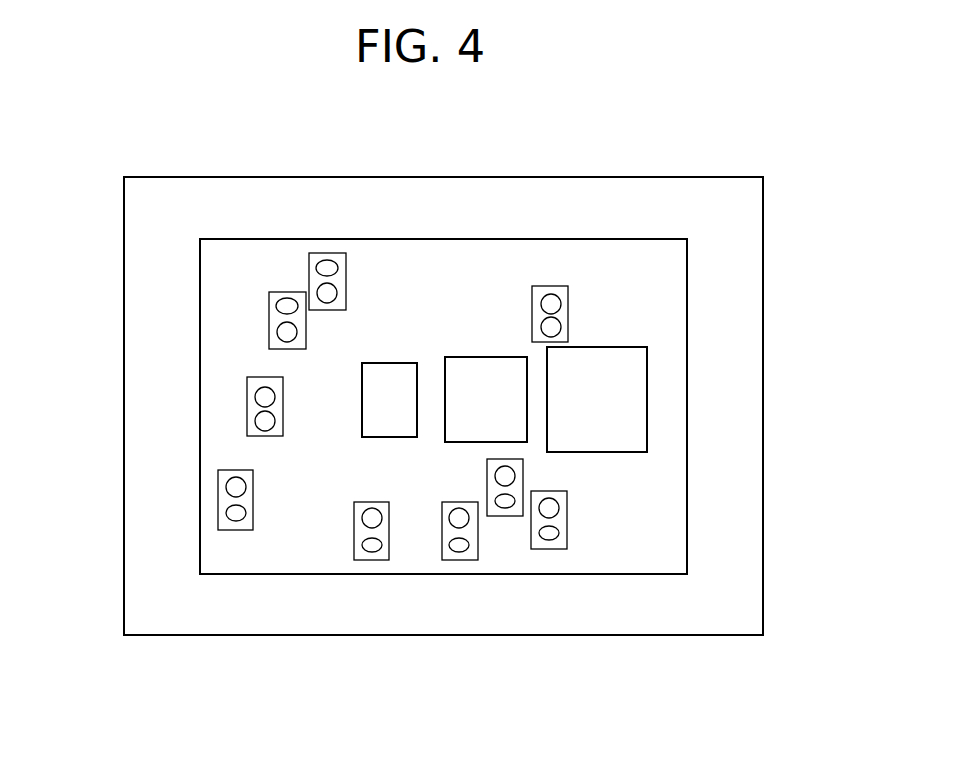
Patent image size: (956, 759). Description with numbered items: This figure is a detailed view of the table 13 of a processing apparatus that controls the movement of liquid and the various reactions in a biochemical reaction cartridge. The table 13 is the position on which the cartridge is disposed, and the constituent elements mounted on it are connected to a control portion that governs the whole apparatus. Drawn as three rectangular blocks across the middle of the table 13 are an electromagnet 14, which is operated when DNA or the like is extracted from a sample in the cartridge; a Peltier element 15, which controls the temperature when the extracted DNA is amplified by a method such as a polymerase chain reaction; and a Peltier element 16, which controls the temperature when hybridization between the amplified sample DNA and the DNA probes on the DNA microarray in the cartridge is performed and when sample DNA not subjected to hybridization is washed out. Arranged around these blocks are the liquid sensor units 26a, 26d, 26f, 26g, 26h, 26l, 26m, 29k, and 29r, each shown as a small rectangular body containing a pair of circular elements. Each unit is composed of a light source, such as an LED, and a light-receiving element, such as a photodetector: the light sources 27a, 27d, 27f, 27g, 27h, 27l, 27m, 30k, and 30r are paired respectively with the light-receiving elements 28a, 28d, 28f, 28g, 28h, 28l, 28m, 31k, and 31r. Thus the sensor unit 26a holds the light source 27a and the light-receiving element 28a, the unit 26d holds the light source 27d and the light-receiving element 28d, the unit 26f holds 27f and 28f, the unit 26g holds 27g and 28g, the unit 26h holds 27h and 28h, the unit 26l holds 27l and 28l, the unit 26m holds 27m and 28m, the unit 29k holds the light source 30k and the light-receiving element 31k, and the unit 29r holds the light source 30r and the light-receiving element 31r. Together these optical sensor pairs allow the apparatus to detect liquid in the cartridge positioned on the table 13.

The table 13 is at (297, 513).
The electromagnet 14 is at (397, 373).
The Peltier element 15 is at (484, 372).
The Peltier element 16 is at (640, 370).
The liquid sensor unit 26a is at (222, 502).
The light source 27a is at (230, 513).
The light-receiving element 28a is at (233, 486).
The liquid sensor unit 26d is at (353, 542).
The light source 27d is at (373, 545).
The light-receiving element 28d is at (363, 520).
The liquid sensor unit 26f is at (445, 533).
The light source 27f is at (462, 547).
The light-receiving element 28f is at (483, 530).
The liquid sensor unit 26g is at (517, 487).
The light source 27g is at (507, 505).
The light-receiving element 28g is at (512, 473).
The liquid sensor unit 26h is at (565, 523).
The light source 27h is at (553, 537).
The light-receiving element 28h is at (558, 508).
The liquid sensor unit 26l is at (276, 316).
The light source 27l is at (283, 306).
The light-receiving element 28l is at (283, 332).
The liquid sensor unit 26m is at (313, 280).
The light source 27m is at (330, 263).
The light-receiving element 28m is at (320, 292).
The liquid sensor unit 29k is at (255, 407).
The light source 30k is at (263, 420).
The light-receiving element 31k is at (263, 395).
The liquid sensor unit 29r is at (560, 302).
The light source 30r is at (557, 327).
The light-receiving element 31r is at (549, 294).